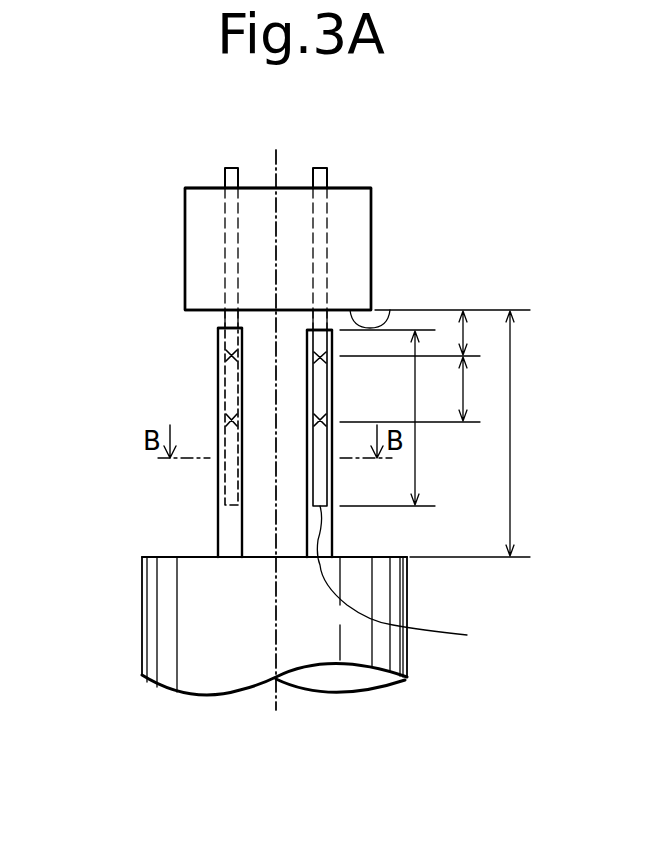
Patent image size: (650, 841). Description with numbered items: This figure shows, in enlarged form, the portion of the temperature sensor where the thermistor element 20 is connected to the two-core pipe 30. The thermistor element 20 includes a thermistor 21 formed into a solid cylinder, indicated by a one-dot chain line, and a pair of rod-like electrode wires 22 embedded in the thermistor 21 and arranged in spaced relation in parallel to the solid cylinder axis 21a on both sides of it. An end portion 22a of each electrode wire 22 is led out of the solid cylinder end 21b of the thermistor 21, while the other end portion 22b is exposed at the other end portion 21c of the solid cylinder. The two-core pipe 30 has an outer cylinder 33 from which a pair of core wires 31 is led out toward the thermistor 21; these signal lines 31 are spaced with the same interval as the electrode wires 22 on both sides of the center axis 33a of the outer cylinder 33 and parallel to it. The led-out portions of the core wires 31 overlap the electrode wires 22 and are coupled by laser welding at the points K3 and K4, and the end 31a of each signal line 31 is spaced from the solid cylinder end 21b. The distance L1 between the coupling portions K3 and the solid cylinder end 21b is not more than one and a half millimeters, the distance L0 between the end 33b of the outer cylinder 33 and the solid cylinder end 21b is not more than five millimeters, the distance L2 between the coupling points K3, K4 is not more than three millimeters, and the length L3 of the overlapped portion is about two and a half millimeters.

The thermistor element 20 is at (172, 185).
The thermistor 21 is at (375, 222).
The solid cylinder axis 21a is at (276, 165).
The solid cylinder end 21b is at (355, 310).
The other end portion of the solid cylinder 21c is at (350, 187).
The electrode wires 22 is at (226, 217).
The end portion of electrode wire 22a is at (418, 488).
The other end portion of electrode wire 22b is at (232, 167).
The two-core pipe 30 is at (142, 580).
The core wires 31 is at (316, 520).
The end of signal line 31a is at (223, 327).
The outer cylinder 33 is at (152, 623).
The center axis of the outer cylinder 33a is at (275, 690).
The end of the outer cylinder 33b is at (377, 557).
The coupling portions K3 is at (316, 358).
The coupling points K4 is at (318, 419).
The distance L0 is at (526, 433).
The distance L1 is at (482, 333).
The distance L2 is at (482, 389).
The length of the overlapped portion L3 is at (431, 418).